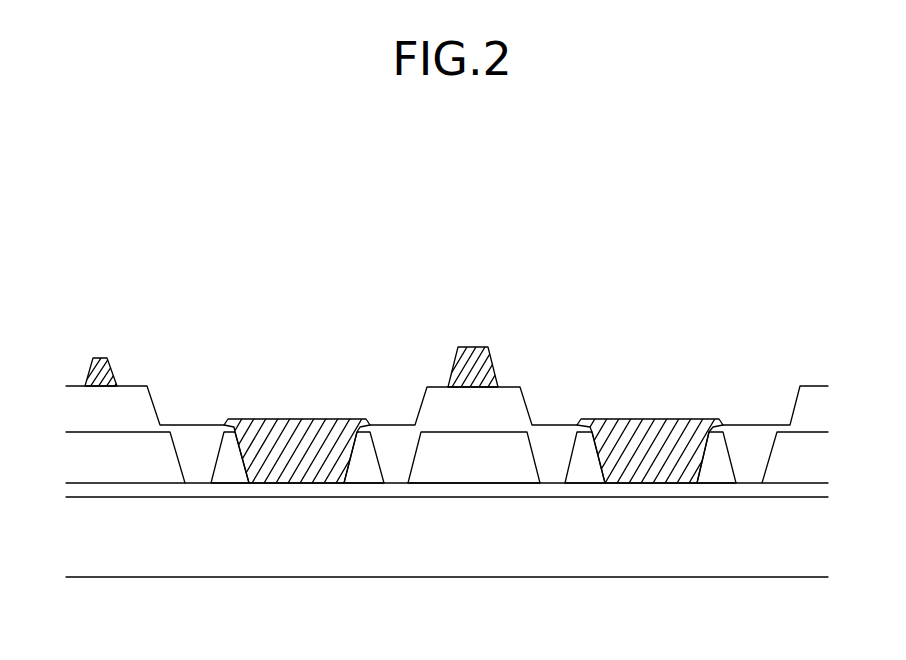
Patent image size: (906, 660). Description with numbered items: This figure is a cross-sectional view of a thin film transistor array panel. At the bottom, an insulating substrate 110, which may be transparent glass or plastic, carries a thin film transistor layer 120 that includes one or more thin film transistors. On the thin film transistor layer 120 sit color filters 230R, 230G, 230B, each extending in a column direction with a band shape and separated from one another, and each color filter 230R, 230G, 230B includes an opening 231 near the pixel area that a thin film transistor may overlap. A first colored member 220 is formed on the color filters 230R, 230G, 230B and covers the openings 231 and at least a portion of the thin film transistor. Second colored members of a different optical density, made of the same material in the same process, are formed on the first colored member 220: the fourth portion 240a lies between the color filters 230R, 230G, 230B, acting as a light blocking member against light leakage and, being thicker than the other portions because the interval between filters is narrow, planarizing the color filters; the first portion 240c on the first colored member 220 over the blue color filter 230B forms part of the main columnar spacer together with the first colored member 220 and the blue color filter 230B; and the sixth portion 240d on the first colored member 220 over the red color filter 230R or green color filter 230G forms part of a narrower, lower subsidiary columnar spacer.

The insulating substrate 110 is at (128, 562).
The thin film transistor layer 120 is at (292, 490).
The first colored member 220 is at (130, 398).
The opening 231 is at (188, 453).
The green color filter 230G is at (230, 473).
The blue color filter 230B is at (365, 473).
The red color filter 230R is at (720, 473).
The fourth portion 240a is at (290, 431).
The first portion 240c is at (473, 346).
The sixth portion 240d is at (98, 357).